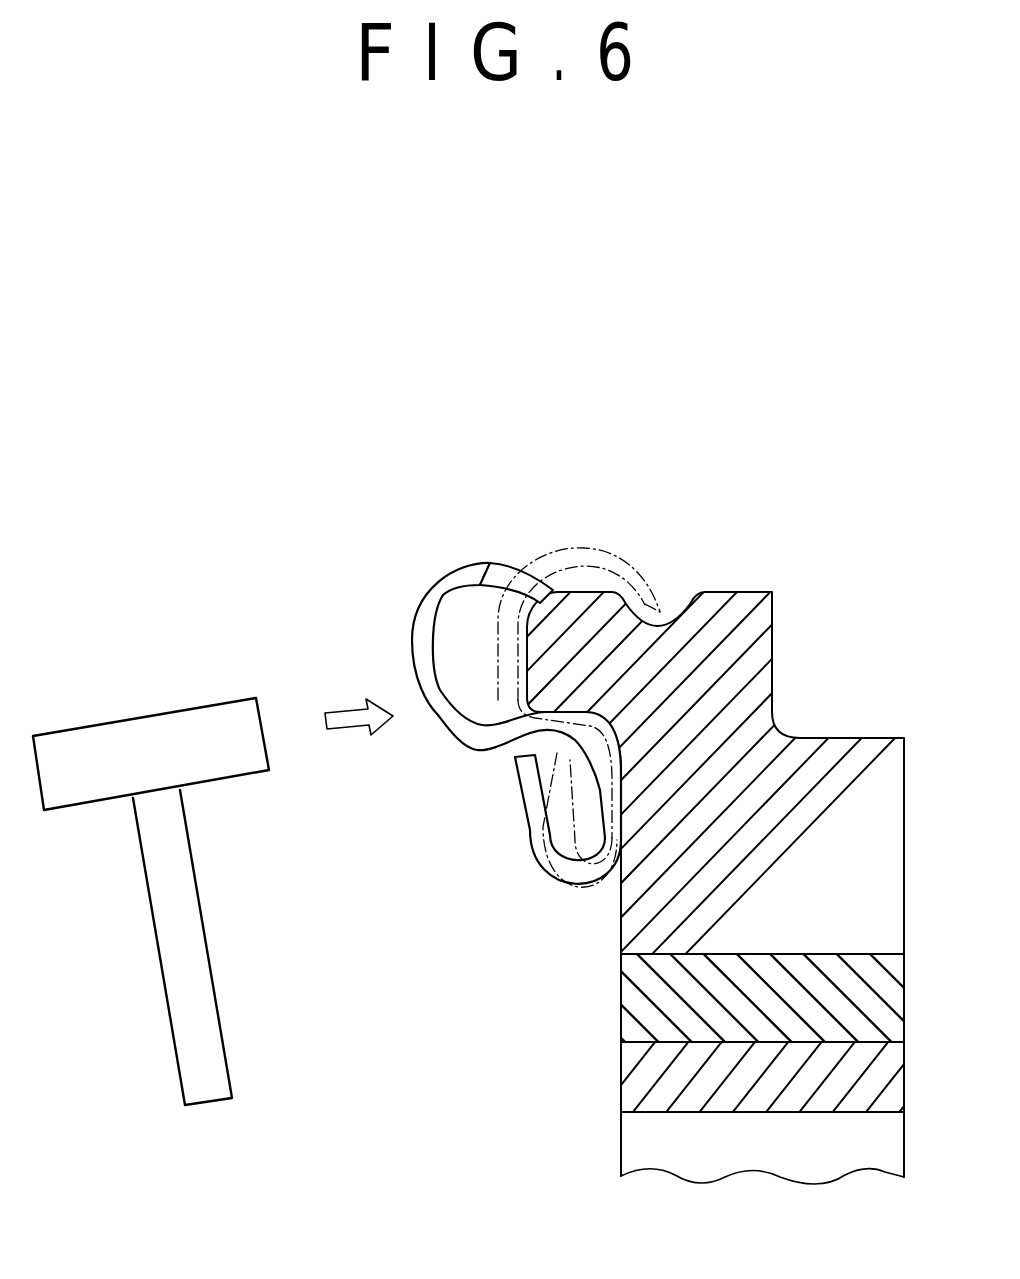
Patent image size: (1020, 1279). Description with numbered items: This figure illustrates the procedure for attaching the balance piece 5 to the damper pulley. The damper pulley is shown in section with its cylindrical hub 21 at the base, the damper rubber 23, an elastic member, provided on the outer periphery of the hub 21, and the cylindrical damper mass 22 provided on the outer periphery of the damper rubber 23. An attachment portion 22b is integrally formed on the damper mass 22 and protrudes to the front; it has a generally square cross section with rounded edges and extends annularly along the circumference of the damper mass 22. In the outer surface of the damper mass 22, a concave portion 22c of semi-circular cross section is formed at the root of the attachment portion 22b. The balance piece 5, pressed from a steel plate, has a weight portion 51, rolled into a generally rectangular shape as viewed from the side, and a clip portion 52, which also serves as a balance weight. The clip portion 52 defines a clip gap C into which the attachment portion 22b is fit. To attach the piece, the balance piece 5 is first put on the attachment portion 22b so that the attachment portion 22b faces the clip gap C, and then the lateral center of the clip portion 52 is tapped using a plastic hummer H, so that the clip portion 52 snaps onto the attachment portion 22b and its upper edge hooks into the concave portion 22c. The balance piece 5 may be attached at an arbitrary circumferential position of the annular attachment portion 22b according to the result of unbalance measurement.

The balance piece 5 is at (465, 675).
The weight portion 51 is at (518, 806).
The clip portion 52 is at (413, 640).
The damper mass 22 is at (762, 657).
The attachment portion 22b is at (580, 607).
The concave portion 22c is at (700, 623).
The damper rubber 23 is at (635, 1008).
The hub 21 is at (635, 1070).
The plastic hummer H is at (137, 703).
The clip gap C is at (500, 683).